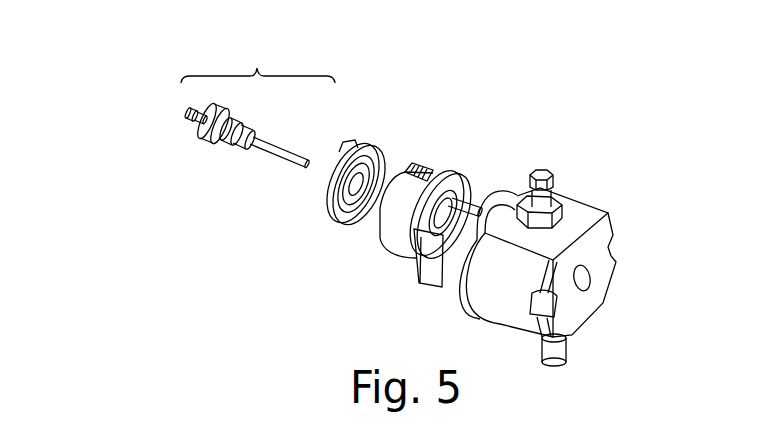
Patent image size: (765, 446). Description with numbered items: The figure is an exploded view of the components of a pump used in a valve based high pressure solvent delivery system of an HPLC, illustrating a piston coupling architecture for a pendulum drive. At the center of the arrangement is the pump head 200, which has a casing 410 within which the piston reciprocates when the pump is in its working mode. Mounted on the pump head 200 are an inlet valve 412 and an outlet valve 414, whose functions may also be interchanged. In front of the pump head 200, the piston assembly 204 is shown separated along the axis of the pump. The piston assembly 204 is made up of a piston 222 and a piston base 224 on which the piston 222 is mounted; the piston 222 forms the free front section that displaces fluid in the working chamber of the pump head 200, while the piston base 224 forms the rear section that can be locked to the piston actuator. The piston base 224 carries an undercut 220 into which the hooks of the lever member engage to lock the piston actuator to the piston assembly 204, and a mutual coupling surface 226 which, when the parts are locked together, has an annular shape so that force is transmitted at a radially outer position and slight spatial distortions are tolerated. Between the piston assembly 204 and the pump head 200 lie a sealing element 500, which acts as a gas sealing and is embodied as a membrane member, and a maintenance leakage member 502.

The pump head 200 is at (540, 54).
The piston assembly 204 is at (258, 63).
The undercut 220 is at (186, 116).
The piston 222 is at (287, 150).
The piston base 224 is at (213, 137).
The mutual coupling surface 226 is at (217, 107).
The casing 410 is at (472, 282).
The inlet valve 412 is at (543, 171).
The outlet valve 414 is at (548, 345).
The sealing element 500 is at (330, 207).
The maintenance leakage member 502 is at (432, 172).